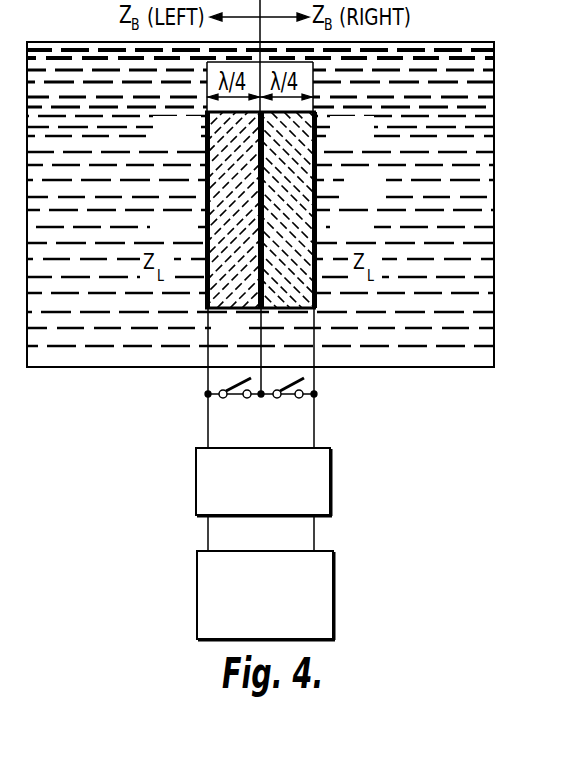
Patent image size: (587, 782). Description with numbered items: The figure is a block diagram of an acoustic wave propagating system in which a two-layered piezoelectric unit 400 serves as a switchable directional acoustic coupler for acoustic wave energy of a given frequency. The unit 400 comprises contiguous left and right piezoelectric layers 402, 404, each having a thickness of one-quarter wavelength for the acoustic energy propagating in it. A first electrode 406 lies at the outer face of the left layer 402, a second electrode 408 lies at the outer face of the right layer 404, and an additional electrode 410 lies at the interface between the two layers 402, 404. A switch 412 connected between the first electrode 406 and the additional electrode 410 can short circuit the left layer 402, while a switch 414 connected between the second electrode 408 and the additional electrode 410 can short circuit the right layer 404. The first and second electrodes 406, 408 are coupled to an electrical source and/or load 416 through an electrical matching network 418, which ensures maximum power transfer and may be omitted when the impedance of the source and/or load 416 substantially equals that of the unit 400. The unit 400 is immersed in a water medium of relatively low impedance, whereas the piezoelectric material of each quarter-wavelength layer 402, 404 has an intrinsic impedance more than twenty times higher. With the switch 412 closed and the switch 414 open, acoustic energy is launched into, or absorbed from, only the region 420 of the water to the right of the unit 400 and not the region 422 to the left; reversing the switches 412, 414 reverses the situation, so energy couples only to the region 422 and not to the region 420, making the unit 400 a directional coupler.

The two-layered piezoelectric unit 400 is at (322, 200).
The left piezoelectric layer 402 is at (205, 123).
The right piezoelectric layer 404 is at (316, 133).
The first electrode 406 is at (206, 233).
The second electrode 408 is at (317, 236).
The additional electrode 410 is at (253, 312).
The switch 412 is at (240, 400).
The switch 414 is at (276, 400).
The electrical source and/or load 416 is at (334, 590).
The electrical matching network 418 is at (332, 478).
The region of the water medium to the right 420 is at (444, 358).
The region of the water medium to the left 422 is at (93, 358).